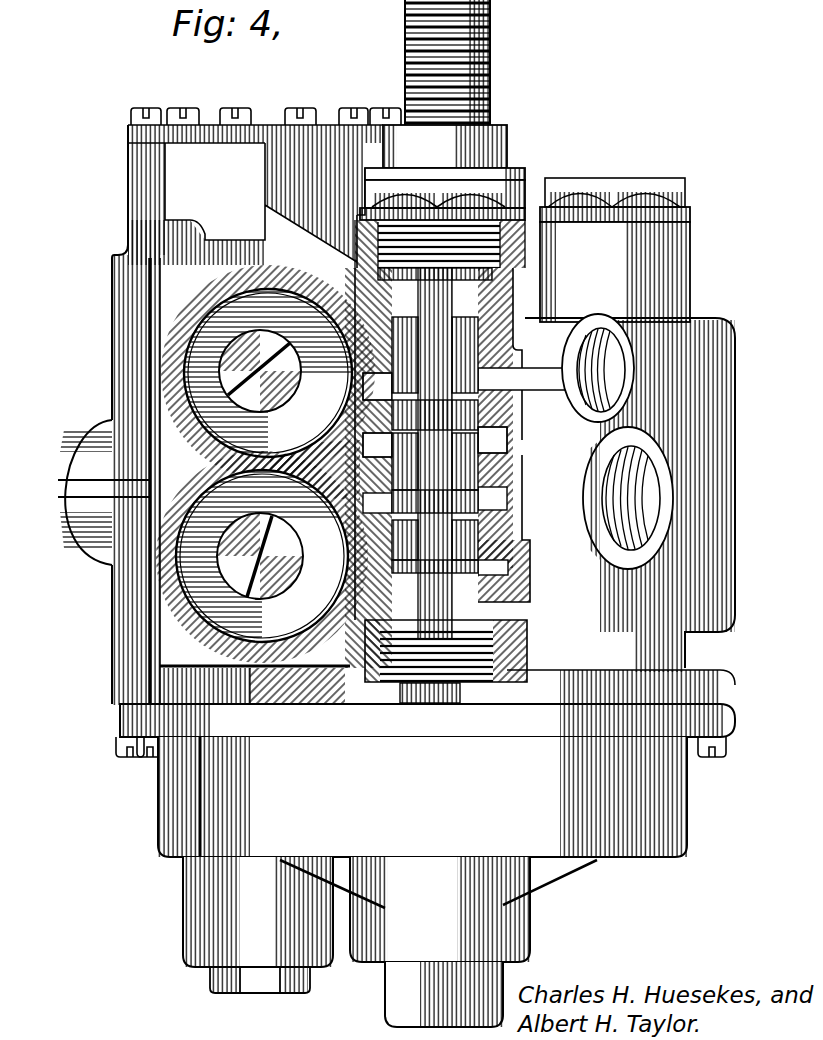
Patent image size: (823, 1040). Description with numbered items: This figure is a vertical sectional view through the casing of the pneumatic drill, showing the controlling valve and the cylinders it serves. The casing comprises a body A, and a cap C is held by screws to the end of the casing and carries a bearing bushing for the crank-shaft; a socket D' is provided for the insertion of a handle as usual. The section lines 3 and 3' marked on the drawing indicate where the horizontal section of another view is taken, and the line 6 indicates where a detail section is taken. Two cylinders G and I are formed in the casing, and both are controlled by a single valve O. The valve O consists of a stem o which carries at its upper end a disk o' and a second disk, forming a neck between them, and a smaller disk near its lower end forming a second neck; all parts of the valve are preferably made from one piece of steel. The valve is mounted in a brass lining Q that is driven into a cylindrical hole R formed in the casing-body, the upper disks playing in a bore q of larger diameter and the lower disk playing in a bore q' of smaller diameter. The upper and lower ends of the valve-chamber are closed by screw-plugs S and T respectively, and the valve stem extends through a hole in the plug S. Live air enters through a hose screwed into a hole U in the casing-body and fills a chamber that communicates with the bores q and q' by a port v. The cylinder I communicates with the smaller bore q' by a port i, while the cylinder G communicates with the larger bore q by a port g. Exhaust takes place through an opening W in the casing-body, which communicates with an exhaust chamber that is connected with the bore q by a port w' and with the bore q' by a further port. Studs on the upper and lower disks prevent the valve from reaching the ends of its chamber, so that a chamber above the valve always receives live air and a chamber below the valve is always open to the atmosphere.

The screw-plug S is at (527, 178).
The brass lining Q is at (615, 264).
The exhaust opening W is at (604, 327).
The casing body A is at (727, 352).
The section line 3'— 3' is at (391, 387).
The cylinder G is at (163, 372).
The socket D' is at (84, 492).
The section line 3— 3 is at (388, 508).
The section line 6— 6 is at (175, 553).
The cylinder I is at (177, 607).
The valve O is at (352, 272).
The disk o' is at (455, 329).
The stem o is at (447, 388).
The port w' is at (504, 388).
The port g is at (365, 447).
The cylindrical hole R is at (514, 413).
The bore q is at (513, 440).
The port v is at (378, 505).
The bore q' is at (527, 587).
The port i is at (380, 560).
The hole U is at (640, 560).
The screw-plug T is at (440, 663).
The cap C is at (600, 856).